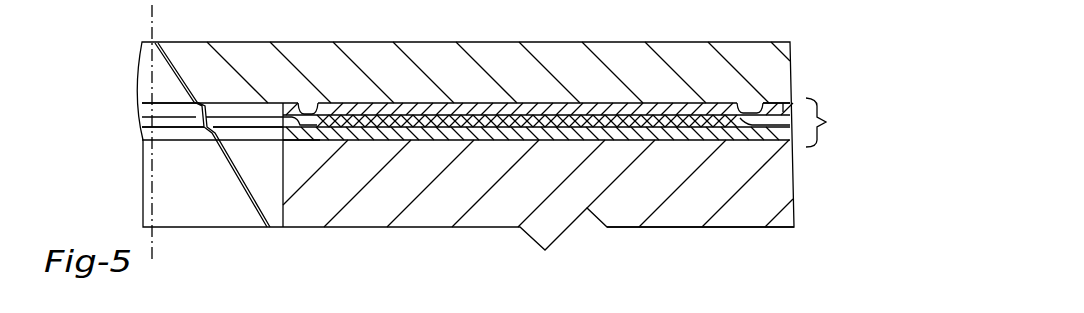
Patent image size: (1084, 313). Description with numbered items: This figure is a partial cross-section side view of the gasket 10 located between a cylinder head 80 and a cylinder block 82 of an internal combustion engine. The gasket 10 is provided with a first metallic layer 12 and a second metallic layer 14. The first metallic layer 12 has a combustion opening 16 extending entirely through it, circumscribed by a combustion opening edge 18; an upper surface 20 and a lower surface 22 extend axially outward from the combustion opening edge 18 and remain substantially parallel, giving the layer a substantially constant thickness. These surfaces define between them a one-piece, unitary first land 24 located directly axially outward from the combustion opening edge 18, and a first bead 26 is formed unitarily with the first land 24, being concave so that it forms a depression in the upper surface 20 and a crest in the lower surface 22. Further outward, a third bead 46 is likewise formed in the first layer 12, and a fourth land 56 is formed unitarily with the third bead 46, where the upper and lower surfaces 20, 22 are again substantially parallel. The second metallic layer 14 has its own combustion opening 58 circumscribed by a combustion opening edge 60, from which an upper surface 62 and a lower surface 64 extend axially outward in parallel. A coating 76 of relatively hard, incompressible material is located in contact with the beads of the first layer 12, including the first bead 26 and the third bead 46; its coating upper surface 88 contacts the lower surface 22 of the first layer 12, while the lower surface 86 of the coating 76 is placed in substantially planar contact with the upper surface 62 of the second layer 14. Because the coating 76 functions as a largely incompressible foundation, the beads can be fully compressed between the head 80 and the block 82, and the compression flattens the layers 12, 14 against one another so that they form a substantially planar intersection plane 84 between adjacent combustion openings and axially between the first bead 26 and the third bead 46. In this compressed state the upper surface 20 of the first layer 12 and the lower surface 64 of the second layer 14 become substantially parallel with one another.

The gasket 10 is at (826, 122).
The first metallic layer 12 is at (790, 102).
The second metallic layer 14 is at (791, 143).
The combustion opening 16 is at (227, 110).
The combustion opening edge 18 is at (283, 112).
The upper surface 20 is at (352, 107).
The lower surface 22 is at (405, 107).
The first land 24 is at (291, 97).
The first bead 26 is at (313, 99).
The third bead 46 is at (750, 98).
The fourth land 56 is at (773, 98).
The combustion opening 58 is at (227, 135).
The combustion opening edge 60 is at (283, 140).
The upper surface 62 is at (347, 130).
The lower surface 64 is at (396, 141).
The coating 76 is at (488, 120).
The cylinder head 80 is at (623, 67).
The cylinder block 82 is at (655, 183).
The intersection plane 84 is at (573, 125).
The lower surface of the coating 86 is at (448, 130).
The coating upper surface 88 is at (509, 130).